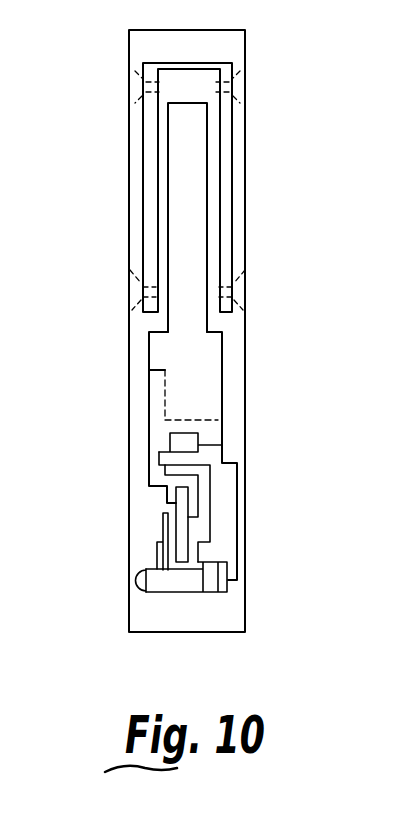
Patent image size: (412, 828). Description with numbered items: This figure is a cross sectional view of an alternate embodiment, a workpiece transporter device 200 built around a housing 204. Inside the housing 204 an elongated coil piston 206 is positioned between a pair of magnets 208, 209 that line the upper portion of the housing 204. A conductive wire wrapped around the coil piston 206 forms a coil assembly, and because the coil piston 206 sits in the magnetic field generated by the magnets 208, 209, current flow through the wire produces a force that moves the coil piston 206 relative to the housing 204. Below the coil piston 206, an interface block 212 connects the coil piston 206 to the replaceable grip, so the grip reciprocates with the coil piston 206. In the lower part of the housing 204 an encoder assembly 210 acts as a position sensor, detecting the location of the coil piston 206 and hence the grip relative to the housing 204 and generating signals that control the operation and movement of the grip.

The workpiece transporter device 200 is at (290, 288).
The housing 204 is at (142, 502).
The coil piston 206 is at (190, 190).
The magnet 208 is at (157, 138).
The magnet 209 is at (227, 118).
The encoder assembly 210 is at (155, 585).
The interface block 212 is at (203, 388).